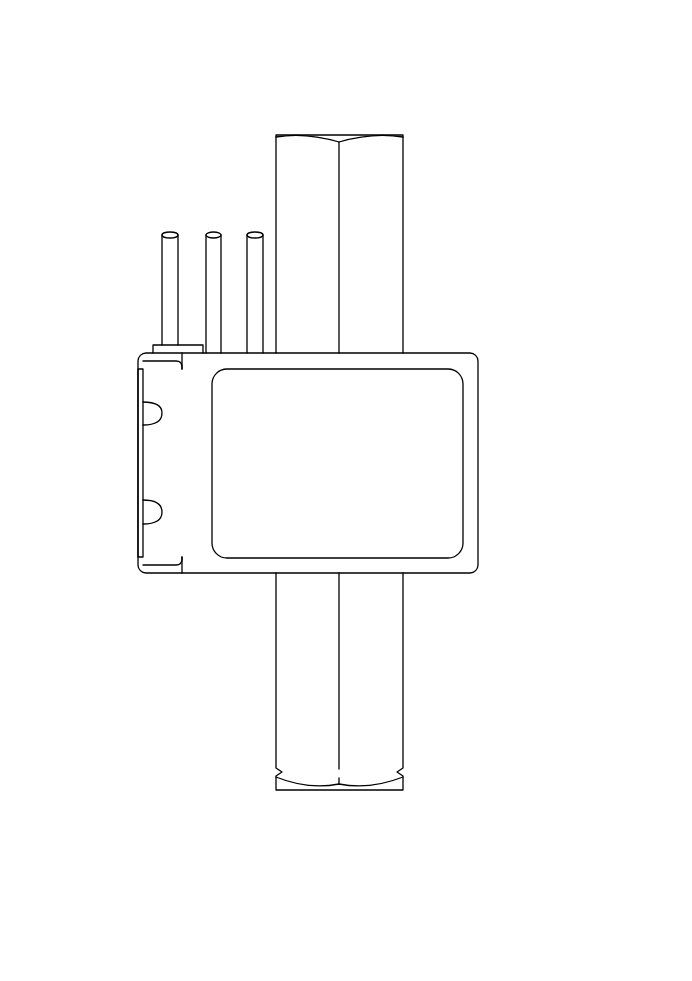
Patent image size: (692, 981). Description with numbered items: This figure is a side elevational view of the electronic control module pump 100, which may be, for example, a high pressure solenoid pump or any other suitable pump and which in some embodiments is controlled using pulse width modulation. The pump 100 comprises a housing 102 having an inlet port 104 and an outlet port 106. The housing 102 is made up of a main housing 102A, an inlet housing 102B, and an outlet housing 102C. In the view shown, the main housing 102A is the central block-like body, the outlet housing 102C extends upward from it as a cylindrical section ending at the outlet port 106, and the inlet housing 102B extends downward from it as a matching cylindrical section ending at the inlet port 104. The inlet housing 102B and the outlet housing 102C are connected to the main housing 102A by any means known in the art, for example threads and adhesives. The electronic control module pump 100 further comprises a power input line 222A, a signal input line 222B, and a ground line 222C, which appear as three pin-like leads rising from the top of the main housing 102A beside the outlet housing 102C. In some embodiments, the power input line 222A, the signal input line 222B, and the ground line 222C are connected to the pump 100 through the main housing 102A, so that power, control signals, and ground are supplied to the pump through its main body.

The electronic control module pump 100 is at (486, 82).
The housing 102 is at (489, 292).
The main housing 102A is at (478, 428).
The inlet housing 102B is at (403, 732).
The outlet housing 102C is at (403, 288).
The inlet port 104 is at (307, 790).
The outlet port 106 is at (307, 135).
The power input line 222A is at (170, 232).
The signal input line 222B is at (213, 232).
The ground line 222C is at (255, 232).